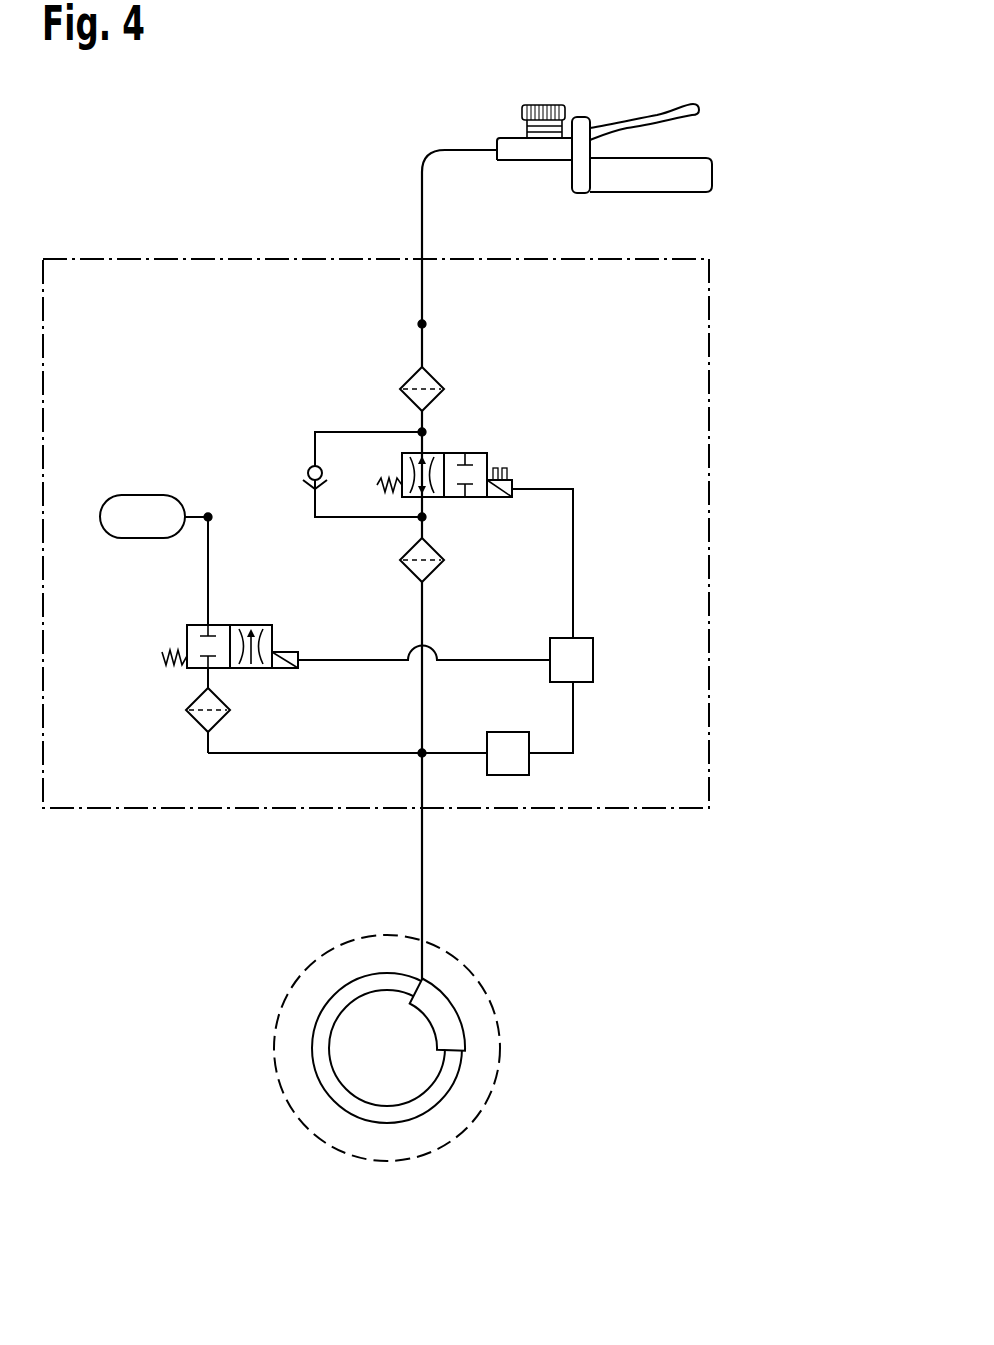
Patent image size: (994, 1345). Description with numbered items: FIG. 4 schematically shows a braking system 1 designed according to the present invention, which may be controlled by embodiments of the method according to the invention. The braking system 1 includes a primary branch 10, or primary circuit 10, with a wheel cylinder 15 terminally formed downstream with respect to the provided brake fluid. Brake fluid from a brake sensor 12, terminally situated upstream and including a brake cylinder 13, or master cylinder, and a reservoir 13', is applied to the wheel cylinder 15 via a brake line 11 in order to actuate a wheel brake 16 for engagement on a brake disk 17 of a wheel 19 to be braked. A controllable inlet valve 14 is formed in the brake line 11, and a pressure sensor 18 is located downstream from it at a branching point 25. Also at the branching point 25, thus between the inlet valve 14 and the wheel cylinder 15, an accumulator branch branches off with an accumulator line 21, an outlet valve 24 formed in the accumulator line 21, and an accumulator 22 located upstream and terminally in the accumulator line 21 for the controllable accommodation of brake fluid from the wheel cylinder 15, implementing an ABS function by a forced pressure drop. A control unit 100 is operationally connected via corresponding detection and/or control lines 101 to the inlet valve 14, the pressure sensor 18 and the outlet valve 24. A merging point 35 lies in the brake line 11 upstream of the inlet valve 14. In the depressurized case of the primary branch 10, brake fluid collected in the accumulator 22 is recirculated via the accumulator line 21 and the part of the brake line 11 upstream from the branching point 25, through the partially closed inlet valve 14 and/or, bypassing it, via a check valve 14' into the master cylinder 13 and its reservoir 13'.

The braking system 1 is at (757, 197).
The primary branch 10 is at (453, 243).
The brake line 11 is at (447, 150).
The brake sensor 12 is at (627, 117).
The brake cylinder 13 is at (452, 144).
The reservoir 13' is at (543, 121).
The inlet valve 14 is at (472, 433).
The check valve 14' is at (345, 445).
The wheel cylinder 15 is at (450, 1000).
The wheel brake 16 is at (477, 1137).
The brake disk 17 is at (455, 1083).
The pressure sensor 18 is at (508, 775).
The wheel 19 is at (500, 1040).
The accumulator line 21 is at (328, 753).
The accumulator 22 is at (130, 495).
The outlet valve 24 is at (208, 623).
The branching point 25 is at (422, 753).
The merging point 35 is at (427, 325).
The control unit 100 is at (593, 653).
The signal line 101 is at (573, 548).